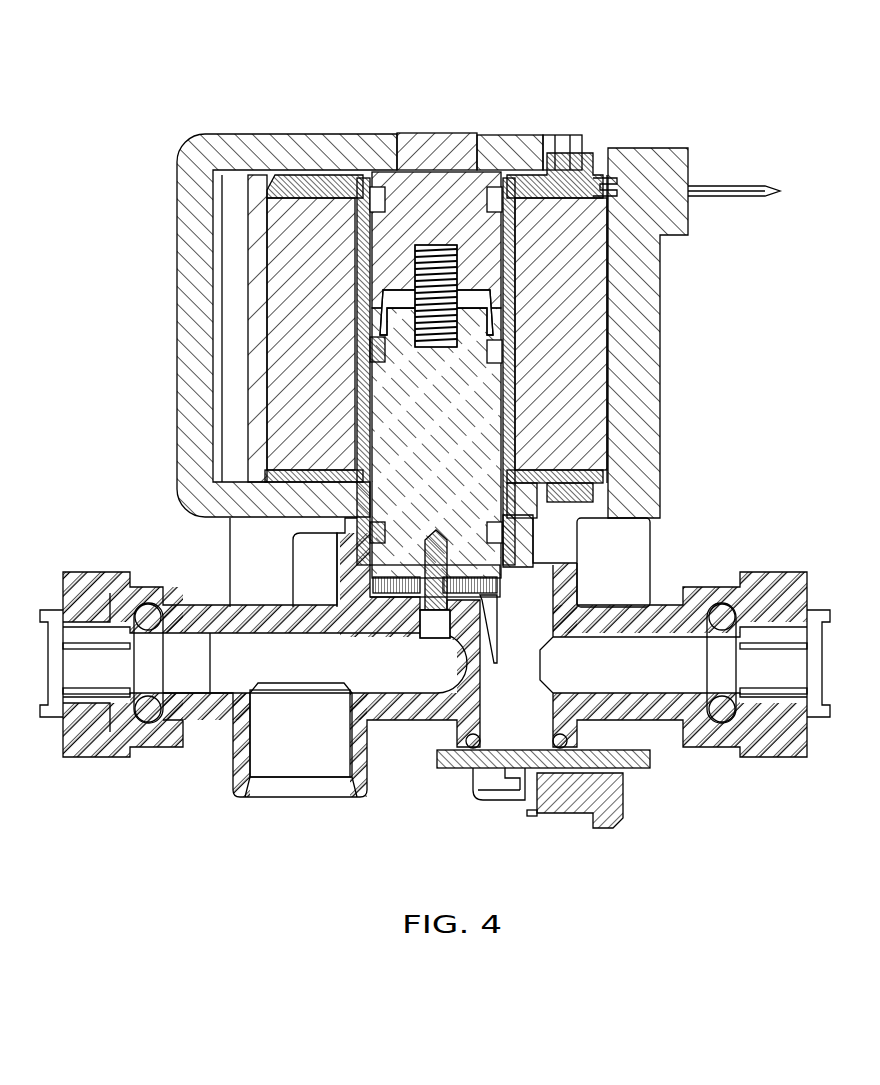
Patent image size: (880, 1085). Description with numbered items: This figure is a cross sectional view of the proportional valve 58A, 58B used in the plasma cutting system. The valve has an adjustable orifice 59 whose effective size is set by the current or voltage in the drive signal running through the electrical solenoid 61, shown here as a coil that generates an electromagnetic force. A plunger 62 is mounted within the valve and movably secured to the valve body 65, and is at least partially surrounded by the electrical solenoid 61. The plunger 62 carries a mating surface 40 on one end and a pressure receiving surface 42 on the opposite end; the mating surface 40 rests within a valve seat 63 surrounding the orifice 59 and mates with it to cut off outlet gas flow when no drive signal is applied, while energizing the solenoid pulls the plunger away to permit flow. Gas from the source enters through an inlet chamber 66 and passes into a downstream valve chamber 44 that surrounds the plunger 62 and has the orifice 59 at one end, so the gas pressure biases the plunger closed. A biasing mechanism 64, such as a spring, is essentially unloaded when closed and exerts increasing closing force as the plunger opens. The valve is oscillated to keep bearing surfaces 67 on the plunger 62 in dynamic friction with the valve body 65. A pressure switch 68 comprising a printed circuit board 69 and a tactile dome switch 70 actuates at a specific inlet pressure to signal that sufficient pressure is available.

The proportional valve 58A is at (659, 52).
The proportional valve 58B is at (435, 475).
The valve body 65 is at (466, 131).
The biasing mechanism 64 is at (447, 246).
The pressure receiving surface 42 is at (400, 307).
The valve chamber 44 is at (475, 296).
The electrical solenoid 61 is at (318, 337).
The plunger 62 is at (421, 452).
The bearing surfaces 67 is at (383, 364).
The valve seat 63 is at (452, 604).
The mating surface 40 is at (413, 597).
The orifice 59 is at (433, 630).
The inlet chamber 66 is at (594, 675).
The tactile dome switch 70 is at (522, 748).
The pressure switch 68 is at (492, 833).
The printed circuit board 69 is at (558, 815).